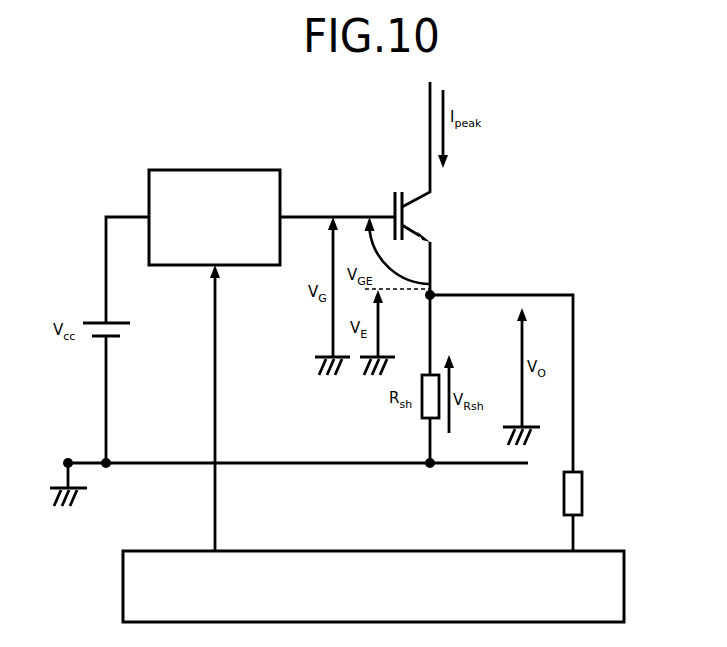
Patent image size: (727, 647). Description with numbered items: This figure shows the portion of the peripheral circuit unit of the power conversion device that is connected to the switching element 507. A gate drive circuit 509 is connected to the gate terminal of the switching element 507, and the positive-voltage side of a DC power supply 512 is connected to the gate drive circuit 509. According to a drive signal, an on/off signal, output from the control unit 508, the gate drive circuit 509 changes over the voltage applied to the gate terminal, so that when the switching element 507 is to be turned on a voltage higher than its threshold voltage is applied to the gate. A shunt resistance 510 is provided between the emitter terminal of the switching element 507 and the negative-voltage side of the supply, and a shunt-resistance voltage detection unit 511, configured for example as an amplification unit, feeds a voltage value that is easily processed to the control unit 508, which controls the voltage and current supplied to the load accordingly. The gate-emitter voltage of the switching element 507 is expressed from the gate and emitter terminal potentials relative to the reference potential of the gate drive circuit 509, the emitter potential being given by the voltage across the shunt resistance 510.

The switching element 507 is at (423, 193).
The control unit 508 is at (624, 583).
The gate drive circuit 509 is at (218, 170).
The shunt resistance 510 is at (433, 374).
The shunt-resistance voltage detection unit 511 is at (583, 492).
The DC power supply 512 is at (83, 322).